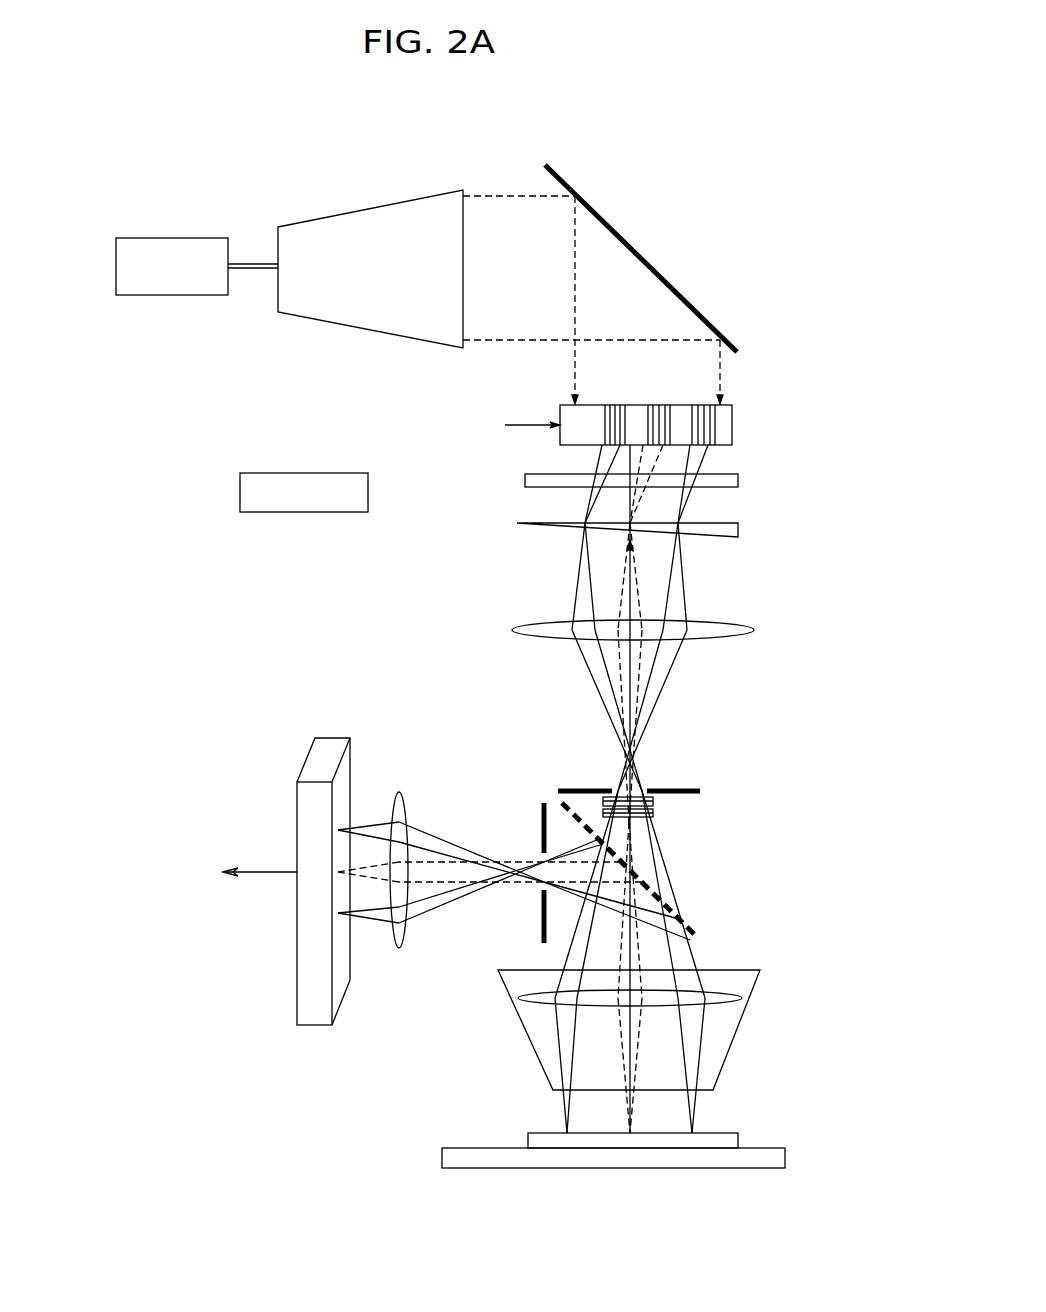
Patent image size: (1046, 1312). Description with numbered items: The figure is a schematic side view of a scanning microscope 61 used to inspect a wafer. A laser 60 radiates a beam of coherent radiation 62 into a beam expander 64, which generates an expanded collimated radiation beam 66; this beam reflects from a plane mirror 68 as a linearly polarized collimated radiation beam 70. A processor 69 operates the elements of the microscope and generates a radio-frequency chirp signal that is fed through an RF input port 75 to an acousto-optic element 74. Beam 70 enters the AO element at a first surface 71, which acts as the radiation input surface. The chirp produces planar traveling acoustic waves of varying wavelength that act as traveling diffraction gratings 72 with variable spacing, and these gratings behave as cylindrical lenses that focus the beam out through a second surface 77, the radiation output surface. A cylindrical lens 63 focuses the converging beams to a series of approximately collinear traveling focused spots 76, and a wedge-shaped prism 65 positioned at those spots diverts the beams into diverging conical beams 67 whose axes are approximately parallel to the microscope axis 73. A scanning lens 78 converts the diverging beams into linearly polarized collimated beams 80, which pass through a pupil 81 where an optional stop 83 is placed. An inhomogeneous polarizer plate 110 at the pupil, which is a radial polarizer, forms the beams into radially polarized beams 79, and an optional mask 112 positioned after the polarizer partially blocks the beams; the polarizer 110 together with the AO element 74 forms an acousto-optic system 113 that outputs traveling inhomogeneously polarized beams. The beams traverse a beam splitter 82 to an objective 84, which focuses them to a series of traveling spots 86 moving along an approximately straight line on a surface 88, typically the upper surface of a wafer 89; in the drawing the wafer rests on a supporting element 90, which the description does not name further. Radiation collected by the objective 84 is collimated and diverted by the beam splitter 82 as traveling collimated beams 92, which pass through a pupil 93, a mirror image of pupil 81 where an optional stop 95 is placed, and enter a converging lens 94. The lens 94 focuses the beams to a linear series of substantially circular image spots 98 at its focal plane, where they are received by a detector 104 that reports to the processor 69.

The laser 60 is at (200, 238).
The beam of coherent radiation 62 is at (262, 263).
The beam expander 64 is at (358, 211).
The expanded collimated radiation beam 66 is at (512, 196).
The plane mirror 68 is at (659, 276).
The acousto-optic system 113 is at (672, 198).
The collimated radiation beam 70 is at (575, 347).
The first surface 71 is at (588, 405).
The traveling diffraction gratings 72 is at (702, 405).
The axis 73 is at (626, 572).
The acousto-optic element 74 is at (732, 425).
The RF input port 75 is at (560, 425).
The second surface 77 is at (570, 446).
The cylindrical lens 63 is at (525, 480).
The wedge-shaped prism 65 is at (738, 531).
The traveling focused spots 76 is at (688, 520).
The diverging conical beams 67 is at (697, 592).
The scanning lens 78 is at (540, 628).
The linearly polarized collimated beams 80 is at (696, 700).
The pupil 81 is at (656, 774).
The stop 83 is at (689, 790).
The inhomogeneous polarizer plate 110 is at (654, 800).
The mask 112 is at (654, 813).
The radially polarized beams 79 is at (728, 870).
The beam splitter 82 is at (690, 925).
The objective 84 is at (526, 1035).
The traveling spots 86 is at (705, 1108).
The surface 88 is at (536, 1133).
The wafer 89 is at (727, 1133).
The stage 90 is at (470, 1148).
The processor 69 is at (305, 473).
The stop 95 is at (543, 803).
The pupil 93 is at (538, 880).
The traveling collimated beams 92 is at (486, 810).
The converging lens 94 is at (397, 796).
The image spots 98 is at (362, 963).
The detector 104 is at (333, 740).
The scanning microscope 61 is at (224, 727).